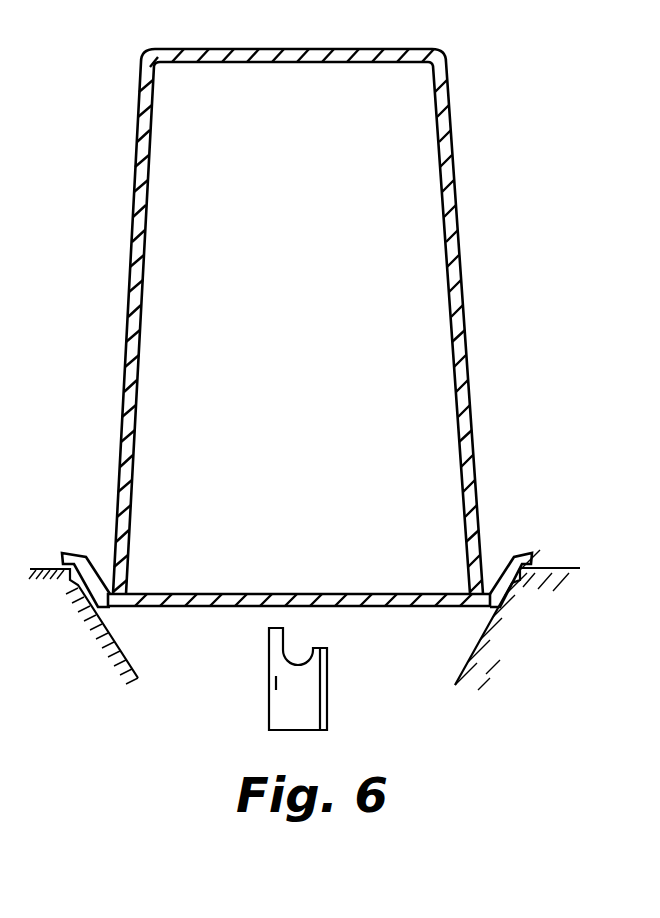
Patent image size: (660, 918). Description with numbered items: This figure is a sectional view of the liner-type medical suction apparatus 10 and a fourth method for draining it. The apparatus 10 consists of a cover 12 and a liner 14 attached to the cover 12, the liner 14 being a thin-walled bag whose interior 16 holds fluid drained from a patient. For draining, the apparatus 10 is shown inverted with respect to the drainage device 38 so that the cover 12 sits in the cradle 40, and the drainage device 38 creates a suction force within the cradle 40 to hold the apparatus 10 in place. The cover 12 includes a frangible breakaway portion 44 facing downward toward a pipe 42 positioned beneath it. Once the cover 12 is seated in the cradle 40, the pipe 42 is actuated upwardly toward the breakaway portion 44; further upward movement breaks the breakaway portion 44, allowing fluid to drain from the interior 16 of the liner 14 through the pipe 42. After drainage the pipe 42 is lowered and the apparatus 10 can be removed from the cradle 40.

The liner-type medical suction apparatus 10 is at (449, 91).
The interior 16 is at (424, 167).
The liner 14 is at (459, 293).
The cover 12 is at (524, 552).
The breakaway portion 44 is at (298, 593).
The pipe 42 is at (300, 704).
The cradle 40 is at (475, 629).
The drainage device 38 is at (97, 645).